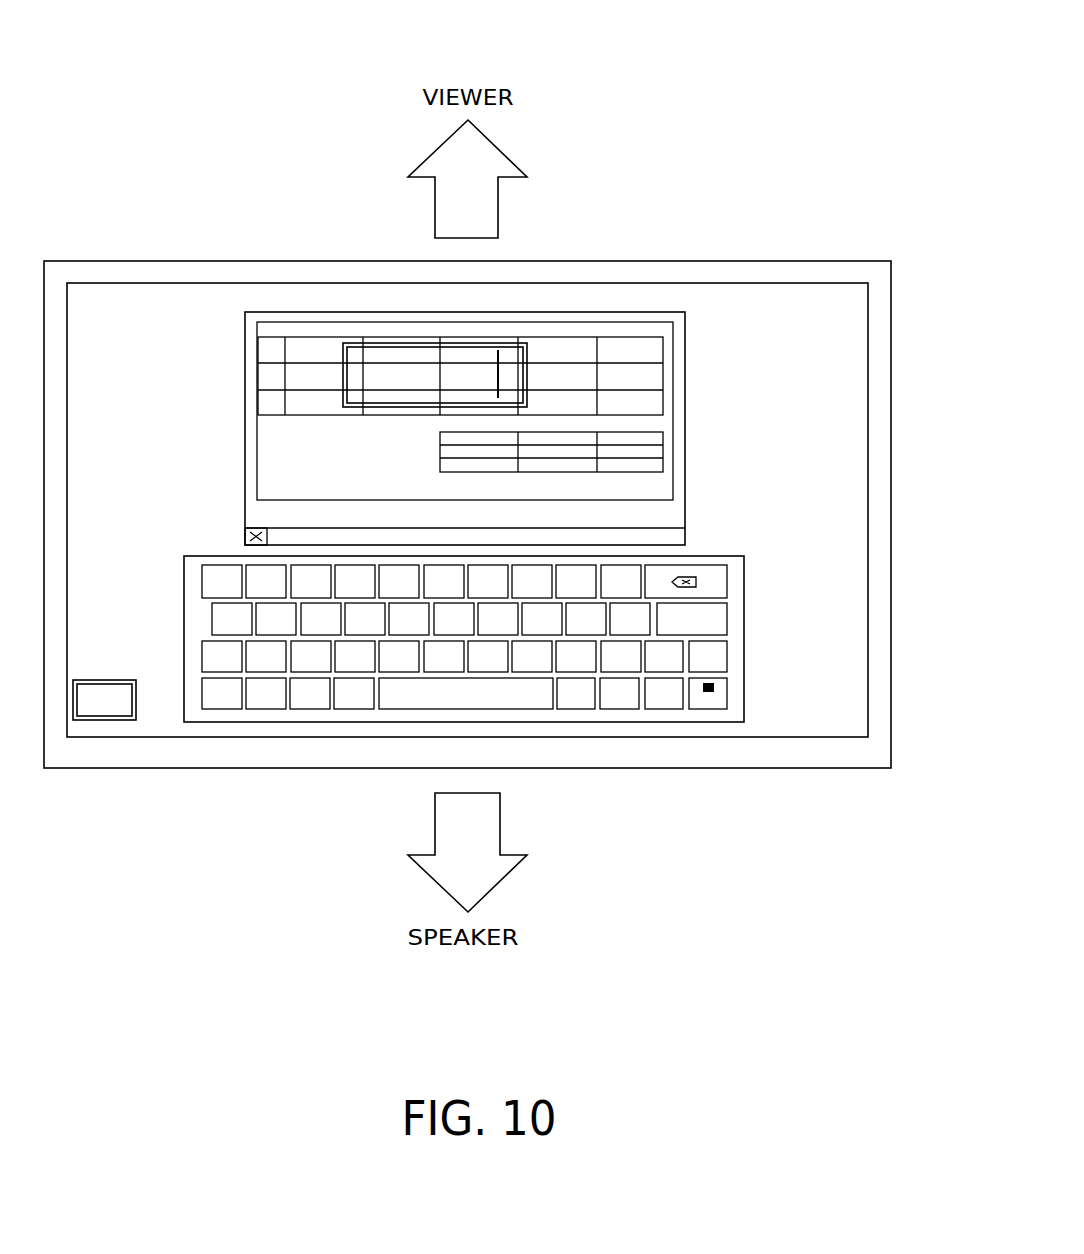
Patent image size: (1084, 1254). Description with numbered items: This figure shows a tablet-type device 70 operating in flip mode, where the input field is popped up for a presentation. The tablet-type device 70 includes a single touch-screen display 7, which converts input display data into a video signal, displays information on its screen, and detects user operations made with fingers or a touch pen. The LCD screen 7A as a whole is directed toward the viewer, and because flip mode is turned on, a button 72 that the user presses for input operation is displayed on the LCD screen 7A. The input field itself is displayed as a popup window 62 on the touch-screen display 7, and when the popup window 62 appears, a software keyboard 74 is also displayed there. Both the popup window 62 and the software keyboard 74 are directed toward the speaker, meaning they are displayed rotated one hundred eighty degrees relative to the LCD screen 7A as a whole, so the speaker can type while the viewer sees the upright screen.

The tablet-type device 70 is at (738, 90).
The touch-screen display 7 is at (868, 407).
The LCD screen 7A is at (830, 520).
The popup window 62 is at (372, 340).
The button 72 is at (105, 713).
The software keyboard 74 is at (733, 712).